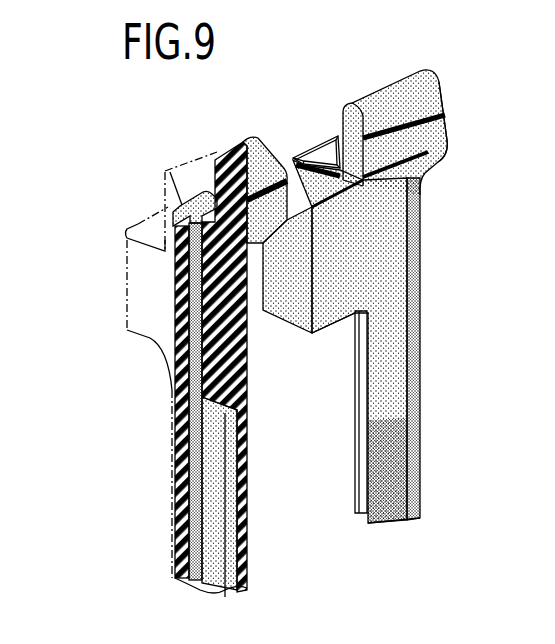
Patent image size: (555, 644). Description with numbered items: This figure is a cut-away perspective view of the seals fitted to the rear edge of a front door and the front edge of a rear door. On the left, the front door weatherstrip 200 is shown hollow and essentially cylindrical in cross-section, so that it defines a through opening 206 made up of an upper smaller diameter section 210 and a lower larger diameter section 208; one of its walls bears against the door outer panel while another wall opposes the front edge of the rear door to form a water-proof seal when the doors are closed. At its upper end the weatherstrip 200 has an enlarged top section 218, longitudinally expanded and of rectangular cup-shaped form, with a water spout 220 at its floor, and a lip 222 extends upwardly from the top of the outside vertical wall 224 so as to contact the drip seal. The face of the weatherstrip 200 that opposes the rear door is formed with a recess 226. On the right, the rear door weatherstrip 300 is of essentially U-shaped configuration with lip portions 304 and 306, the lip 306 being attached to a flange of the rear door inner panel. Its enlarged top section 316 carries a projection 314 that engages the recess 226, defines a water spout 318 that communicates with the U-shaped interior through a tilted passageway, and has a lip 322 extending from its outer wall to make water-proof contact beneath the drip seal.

The weatherstrip 200 is at (172, 460).
The through opening 206 is at (178, 487).
The lower larger diameter section 208 is at (183, 537).
The upper smaller diameter section 210 is at (139, 454).
The enlarged top section 218 is at (126, 231).
The water spout 220 is at (212, 175).
The lip 222 is at (258, 150).
The outside vertical wall 224 is at (182, 205).
The recess 226 is at (260, 313).
The weatherstrip 300 is at (422, 247).
The lip portion 304 is at (355, 383).
The lip portion 306 is at (383, 470).
The projection 314 is at (305, 187).
The enlarged top section 316 is at (447, 88).
The water spout 318 is at (332, 140).
The lip 322 is at (408, 90).